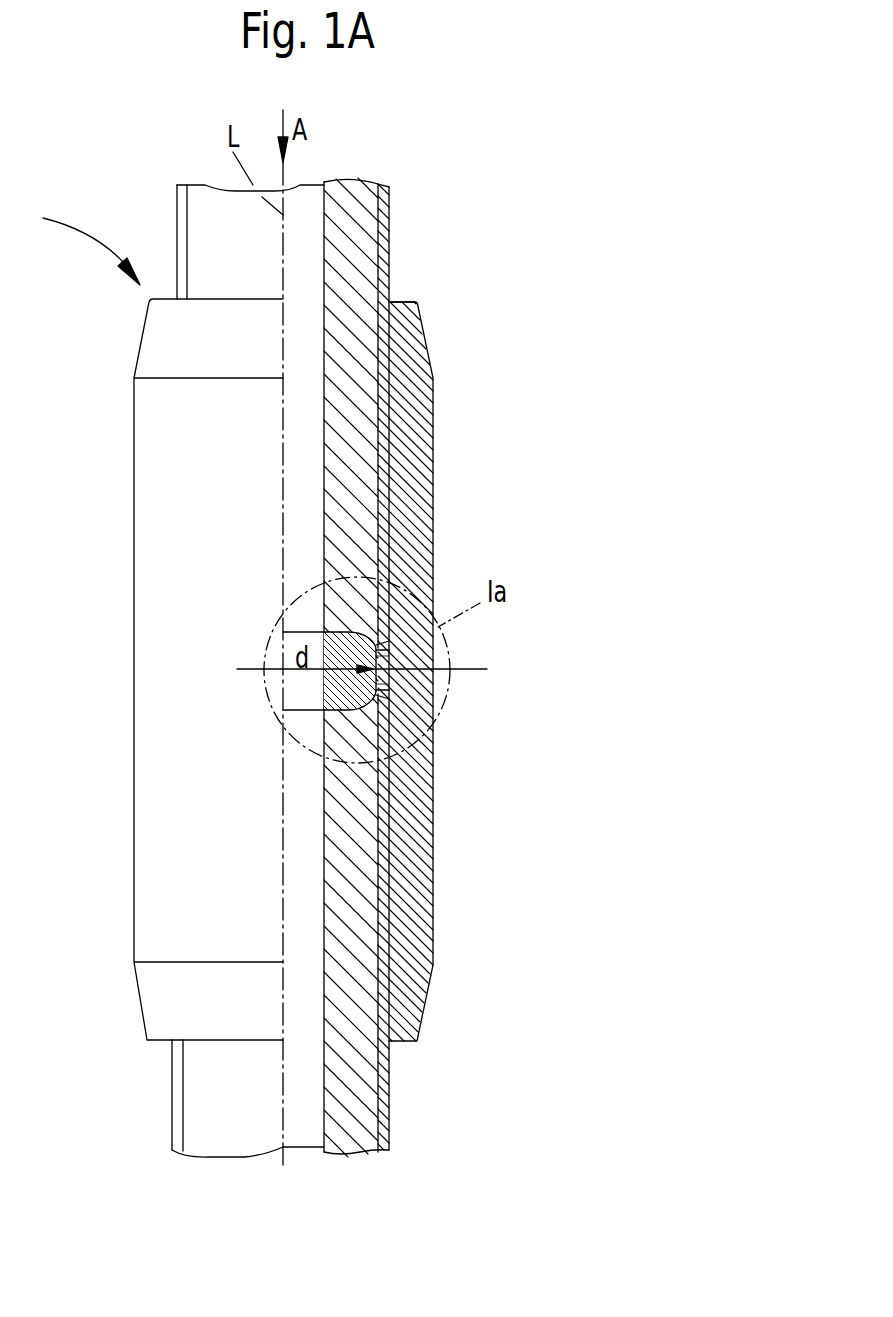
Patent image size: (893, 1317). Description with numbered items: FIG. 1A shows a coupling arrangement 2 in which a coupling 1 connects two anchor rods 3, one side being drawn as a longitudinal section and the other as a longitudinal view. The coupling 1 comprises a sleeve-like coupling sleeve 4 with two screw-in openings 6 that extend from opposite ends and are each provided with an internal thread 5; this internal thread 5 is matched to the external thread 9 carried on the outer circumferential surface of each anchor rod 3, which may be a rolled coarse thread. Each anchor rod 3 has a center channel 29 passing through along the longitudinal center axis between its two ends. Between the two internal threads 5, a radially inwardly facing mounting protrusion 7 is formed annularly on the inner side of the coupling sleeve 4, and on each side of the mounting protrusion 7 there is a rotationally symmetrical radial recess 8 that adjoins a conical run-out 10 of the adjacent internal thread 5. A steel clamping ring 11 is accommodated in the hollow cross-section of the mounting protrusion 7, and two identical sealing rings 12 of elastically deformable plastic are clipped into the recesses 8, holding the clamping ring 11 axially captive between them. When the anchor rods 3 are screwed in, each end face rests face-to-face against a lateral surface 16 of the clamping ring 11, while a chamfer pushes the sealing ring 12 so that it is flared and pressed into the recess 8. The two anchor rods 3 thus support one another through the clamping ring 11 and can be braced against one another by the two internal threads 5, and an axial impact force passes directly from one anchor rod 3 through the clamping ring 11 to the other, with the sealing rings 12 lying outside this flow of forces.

The coupling 1 is at (183, 482).
The coupling arrangement 2 is at (81, 244).
The anchor rod 3 is at (355, 215).
The coupling sleeve 4 is at (212, 638).
The internal thread 5 is at (392, 387).
The screw-in opening 6 is at (393, 303).
The mounting protrusion 7 is at (370, 666).
The recess 8 is at (390, 652).
The external thread 9 is at (385, 260).
The conical run-out 10 is at (384, 650).
The clamping ring 11 is at (381, 706).
The sealing ring 12 is at (382, 656).
The lateral surface 16 is at (381, 643).
The center channel 29 is at (305, 424).